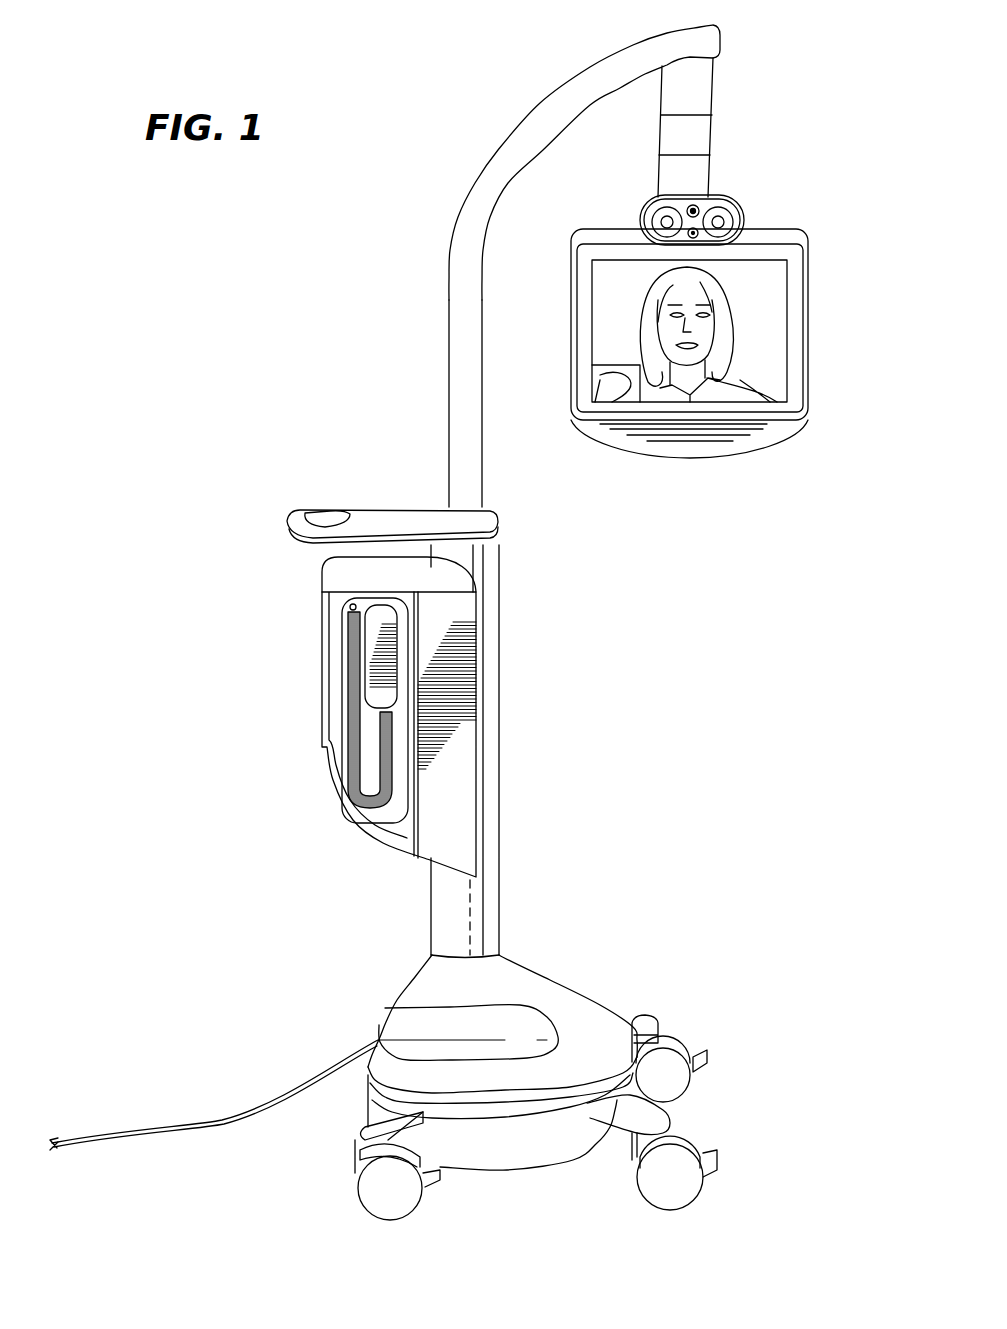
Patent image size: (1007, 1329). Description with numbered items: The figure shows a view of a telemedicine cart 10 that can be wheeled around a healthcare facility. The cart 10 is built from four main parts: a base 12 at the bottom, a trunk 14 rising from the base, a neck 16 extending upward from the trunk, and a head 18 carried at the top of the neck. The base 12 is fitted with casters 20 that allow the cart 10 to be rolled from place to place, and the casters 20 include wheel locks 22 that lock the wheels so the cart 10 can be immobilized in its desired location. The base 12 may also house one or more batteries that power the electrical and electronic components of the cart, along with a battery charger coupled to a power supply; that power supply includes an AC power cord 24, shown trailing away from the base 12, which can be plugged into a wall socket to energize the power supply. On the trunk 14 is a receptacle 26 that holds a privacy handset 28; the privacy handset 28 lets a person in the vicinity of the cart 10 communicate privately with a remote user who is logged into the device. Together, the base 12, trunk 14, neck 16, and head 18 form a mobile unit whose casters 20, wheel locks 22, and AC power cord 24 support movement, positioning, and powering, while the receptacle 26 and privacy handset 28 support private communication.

The telemedicine cart 10 is at (463, 80).
The base 12 is at (378, 1037).
The trunk 14 is at (499, 692).
The neck 16 is at (455, 218).
The head 18 is at (807, 313).
The casters 20 is at (688, 1083).
The wheel locks 22 is at (707, 1053).
The AC power cord 24 is at (222, 1120).
The receptacle 26 is at (383, 712).
The privacy handset 28 is at (377, 645).